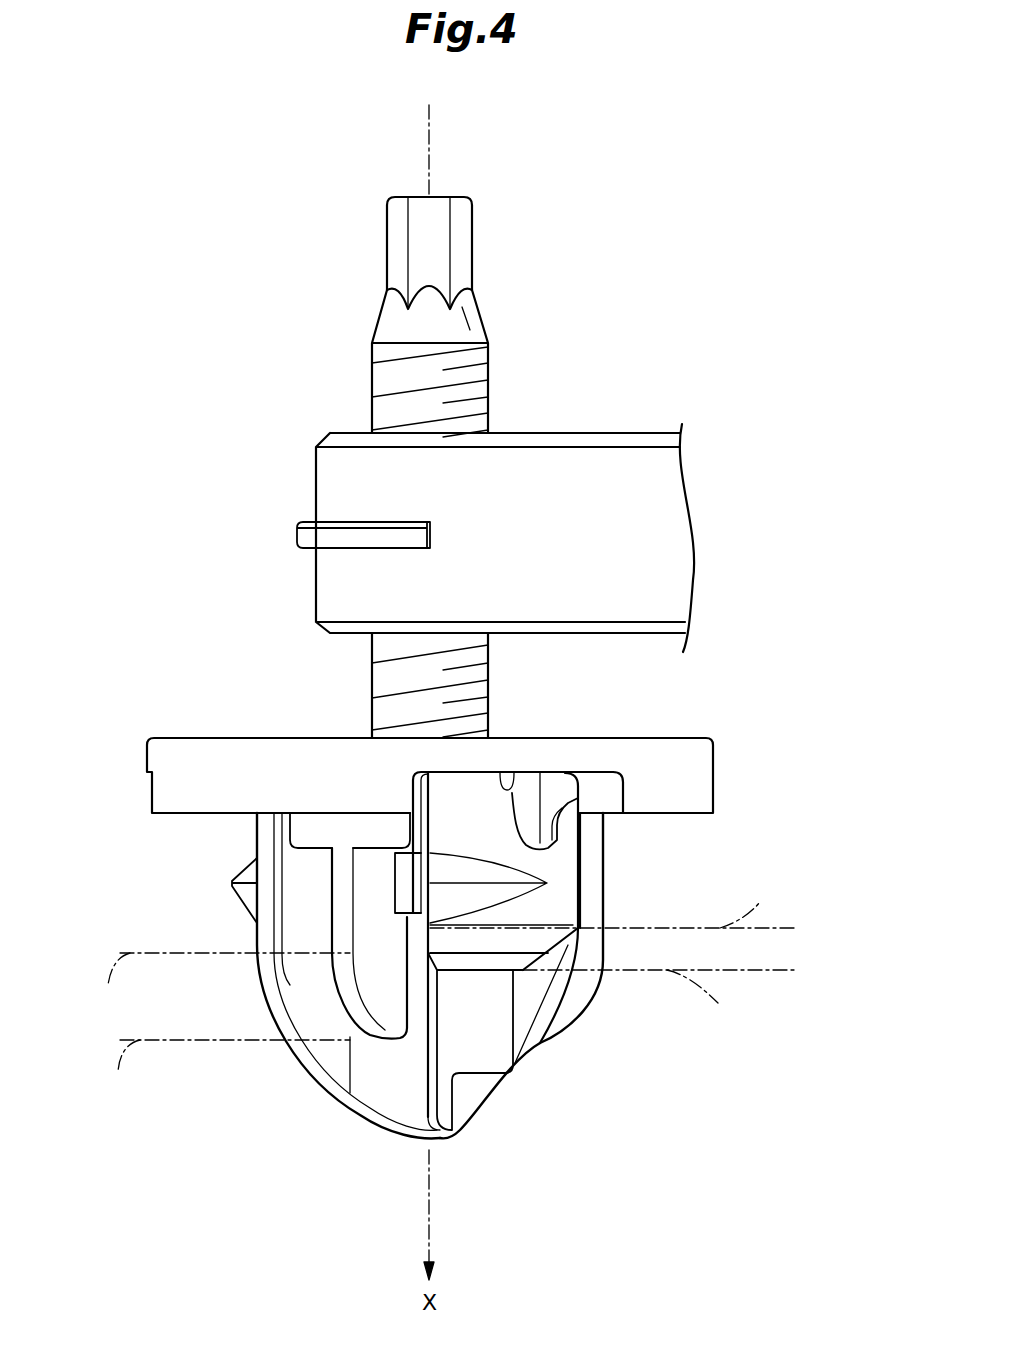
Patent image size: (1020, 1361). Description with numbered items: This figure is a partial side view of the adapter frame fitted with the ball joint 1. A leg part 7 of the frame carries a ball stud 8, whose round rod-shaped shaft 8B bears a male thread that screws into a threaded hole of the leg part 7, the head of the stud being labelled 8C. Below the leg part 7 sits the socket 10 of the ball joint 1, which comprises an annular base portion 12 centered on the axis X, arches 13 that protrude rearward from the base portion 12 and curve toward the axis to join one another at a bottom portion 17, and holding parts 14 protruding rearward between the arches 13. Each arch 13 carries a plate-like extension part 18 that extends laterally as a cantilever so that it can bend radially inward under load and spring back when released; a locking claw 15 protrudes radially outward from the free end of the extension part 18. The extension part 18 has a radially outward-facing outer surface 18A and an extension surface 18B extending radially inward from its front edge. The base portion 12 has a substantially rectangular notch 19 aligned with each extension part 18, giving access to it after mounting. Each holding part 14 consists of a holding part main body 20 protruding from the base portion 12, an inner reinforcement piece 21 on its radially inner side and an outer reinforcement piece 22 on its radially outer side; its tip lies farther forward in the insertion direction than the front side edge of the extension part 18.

The ball joint 1 is at (707, 668).
The leg part 7 is at (638, 497).
The ball stud 8 is at (412, 454).
The shaft 8B is at (375, 380).
The bolt head 8C is at (452, 210).
The socket 10 is at (471, 816).
The base portion 12 is at (697, 785).
The arch 13 is at (278, 923).
The holding part 14 is at (338, 957).
The locking claw 15 is at (503, 883).
The bottom portion 17 is at (527, 1065).
The extension part 18 is at (466, 903).
The outer surface 18A is at (563, 858).
The extension surface 18B is at (527, 948).
The notch 19 is at (510, 793).
The holding part main body 20 is at (314, 1015).
The inner reinforcement piece 21 is at (405, 900).
The outer reinforcement piece 22 is at (305, 830).